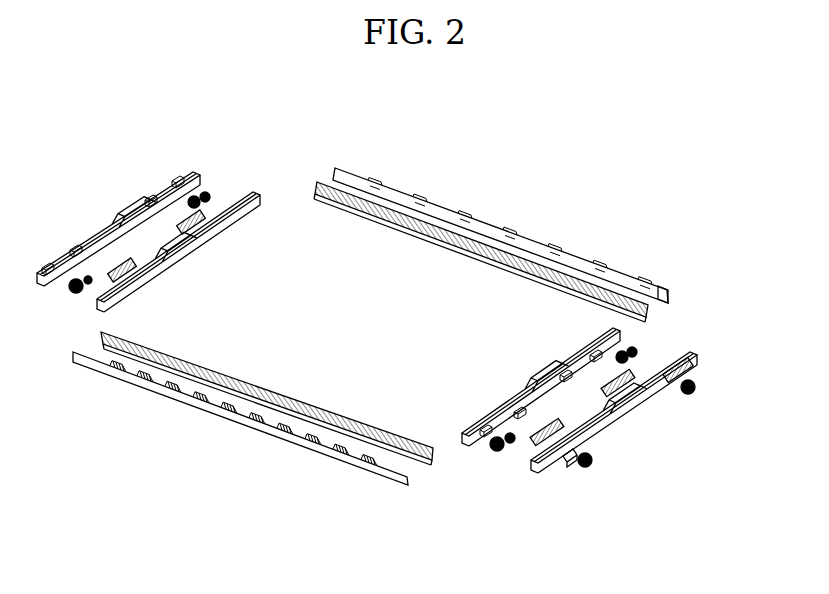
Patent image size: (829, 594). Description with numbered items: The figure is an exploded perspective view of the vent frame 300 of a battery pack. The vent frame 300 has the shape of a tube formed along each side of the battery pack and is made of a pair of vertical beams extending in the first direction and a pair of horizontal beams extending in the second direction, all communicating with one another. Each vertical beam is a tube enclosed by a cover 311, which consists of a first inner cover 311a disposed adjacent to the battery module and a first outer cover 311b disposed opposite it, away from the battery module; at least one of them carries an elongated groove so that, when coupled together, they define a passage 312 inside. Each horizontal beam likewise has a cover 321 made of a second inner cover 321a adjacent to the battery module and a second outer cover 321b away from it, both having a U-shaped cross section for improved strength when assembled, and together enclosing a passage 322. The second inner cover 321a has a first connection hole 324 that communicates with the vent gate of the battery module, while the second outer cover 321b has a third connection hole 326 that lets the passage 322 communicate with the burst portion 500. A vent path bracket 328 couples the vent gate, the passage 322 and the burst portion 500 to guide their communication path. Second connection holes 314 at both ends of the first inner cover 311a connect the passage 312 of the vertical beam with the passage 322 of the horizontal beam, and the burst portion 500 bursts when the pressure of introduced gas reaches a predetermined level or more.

The vent frame 300 is at (95, 138).
The cover 311 is at (260, 449).
The first inner cover 311a is at (426, 467).
The first outer cover 311b is at (240, 442).
The passage 312 is at (382, 428).
The second connection hole 314 is at (317, 197).
The cover 321 is at (627, 399).
The second inner cover 321a is at (618, 330).
The second outer cover 321b is at (691, 354).
The passage 322 is at (47, 296).
The first connection hole 324 is at (151, 284).
The third connection hole 326 is at (568, 465).
The vent path bracket 328 is at (528, 441).
The burst portion 500 is at (591, 461).